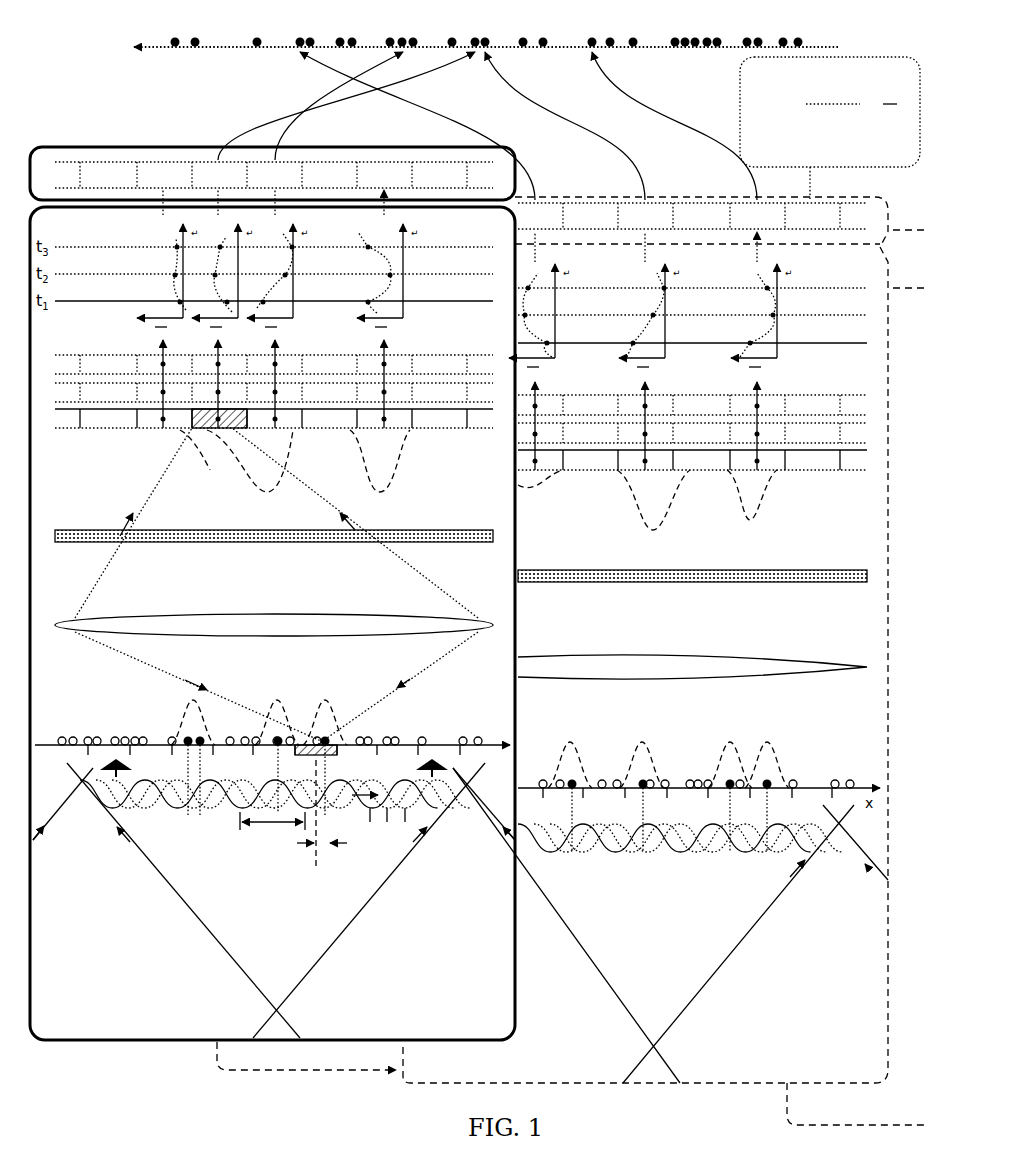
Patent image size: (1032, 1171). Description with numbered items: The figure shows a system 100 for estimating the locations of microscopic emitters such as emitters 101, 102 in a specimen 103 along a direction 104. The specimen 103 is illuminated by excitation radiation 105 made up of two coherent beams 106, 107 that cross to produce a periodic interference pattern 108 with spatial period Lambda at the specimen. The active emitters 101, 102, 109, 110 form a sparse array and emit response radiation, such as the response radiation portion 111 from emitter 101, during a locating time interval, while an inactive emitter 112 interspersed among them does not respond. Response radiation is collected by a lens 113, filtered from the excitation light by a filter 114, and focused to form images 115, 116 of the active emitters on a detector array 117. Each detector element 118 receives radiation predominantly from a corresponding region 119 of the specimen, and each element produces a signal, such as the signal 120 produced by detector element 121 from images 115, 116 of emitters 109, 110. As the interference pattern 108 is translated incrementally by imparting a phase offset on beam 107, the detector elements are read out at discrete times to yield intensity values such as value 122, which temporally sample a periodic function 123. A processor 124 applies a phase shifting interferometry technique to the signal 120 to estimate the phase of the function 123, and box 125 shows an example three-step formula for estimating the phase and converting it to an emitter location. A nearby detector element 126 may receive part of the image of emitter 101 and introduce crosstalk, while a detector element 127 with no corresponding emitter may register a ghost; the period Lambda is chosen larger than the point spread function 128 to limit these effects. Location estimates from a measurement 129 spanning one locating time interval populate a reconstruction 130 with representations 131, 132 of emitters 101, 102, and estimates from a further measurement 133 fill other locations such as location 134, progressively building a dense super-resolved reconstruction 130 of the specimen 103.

The system 100 is at (97, 73).
The emitter 101 is at (256, 737).
The emitter 102 is at (280, 737).
The specimen 103 is at (43, 742).
The direction 104 is at (507, 740).
The excitation radiation 105 is at (265, 916).
The coherent beam 106 is at (257, 1038).
The coherent beam 107 is at (295, 1038).
The periodic interference pattern 108 is at (181, 808).
The active emitter 109 is at (188, 738).
The active emitter 110 is at (193, 735).
The response radiation portion 111 is at (448, 602).
The inactive emitter 112 is at (422, 737).
The lens 113 is at (480, 620).
The filter 114 is at (445, 530).
The image 115 is at (380, 474).
The image 116 is at (410, 432).
The detector array 117 is at (72, 443).
The detector element 118 is at (207, 430).
The region 119 is at (333, 756).
The signal 120 is at (414, 320).
The detector element 121 is at (392, 440).
The intensity value 122 is at (367, 303).
The periodic function 123 is at (367, 245).
The processor 124 is at (148, 147).
The box 125 is at (740, 108).
The detector element 126 is at (282, 430).
The detector element 127 is at (158, 432).
The point spread function 128 is at (325, 738).
The measurement 129 is at (123, 1043).
The reconstruction 130 is at (828, 46).
The representation 131 is at (478, 47).
The representation 132 is at (403, 47).
The measurement 133 is at (412, 1084).
The location 134 is at (592, 47).